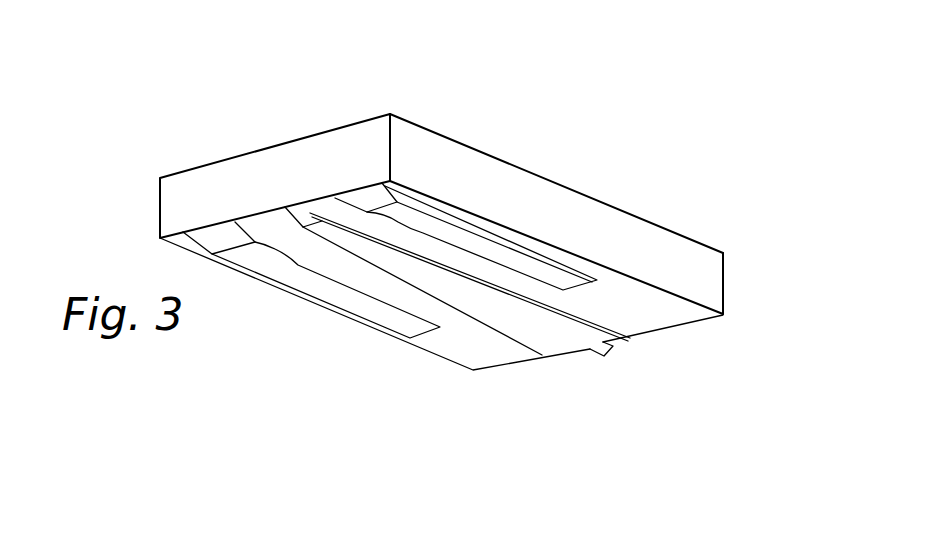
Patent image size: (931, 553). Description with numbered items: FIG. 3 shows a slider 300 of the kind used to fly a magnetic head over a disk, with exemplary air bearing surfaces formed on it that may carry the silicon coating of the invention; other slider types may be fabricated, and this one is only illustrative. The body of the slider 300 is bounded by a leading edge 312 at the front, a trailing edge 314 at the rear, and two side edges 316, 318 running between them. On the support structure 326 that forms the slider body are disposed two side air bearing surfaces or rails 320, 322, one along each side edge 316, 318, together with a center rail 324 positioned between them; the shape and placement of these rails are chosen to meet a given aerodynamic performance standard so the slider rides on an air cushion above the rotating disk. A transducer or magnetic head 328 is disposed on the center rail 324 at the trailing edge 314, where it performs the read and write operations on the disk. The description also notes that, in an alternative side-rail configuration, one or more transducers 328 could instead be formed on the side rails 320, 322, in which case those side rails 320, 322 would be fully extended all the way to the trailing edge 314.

The slider 300 is at (552, 62).
The leading edge 312 is at (250, 171).
The trailing edge 314 is at (734, 281).
The side edge 316 is at (672, 243).
The side edge 318 is at (298, 297).
The side air bearing surface or rail 320 is at (543, 267).
The side air bearing surface or rail 322 is at (338, 300).
The center rail 324 is at (527, 337).
The support structure 326 is at (657, 316).
The transducer or magnetic head 328 is at (597, 355).